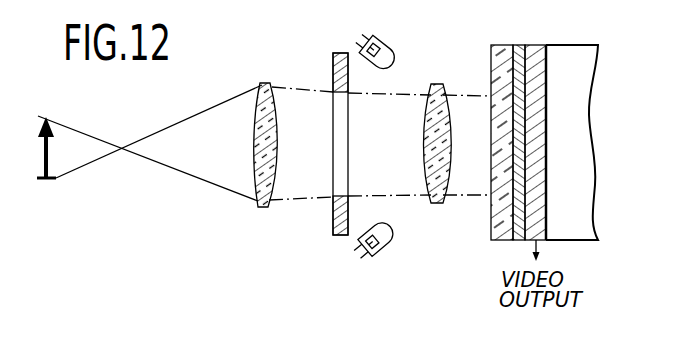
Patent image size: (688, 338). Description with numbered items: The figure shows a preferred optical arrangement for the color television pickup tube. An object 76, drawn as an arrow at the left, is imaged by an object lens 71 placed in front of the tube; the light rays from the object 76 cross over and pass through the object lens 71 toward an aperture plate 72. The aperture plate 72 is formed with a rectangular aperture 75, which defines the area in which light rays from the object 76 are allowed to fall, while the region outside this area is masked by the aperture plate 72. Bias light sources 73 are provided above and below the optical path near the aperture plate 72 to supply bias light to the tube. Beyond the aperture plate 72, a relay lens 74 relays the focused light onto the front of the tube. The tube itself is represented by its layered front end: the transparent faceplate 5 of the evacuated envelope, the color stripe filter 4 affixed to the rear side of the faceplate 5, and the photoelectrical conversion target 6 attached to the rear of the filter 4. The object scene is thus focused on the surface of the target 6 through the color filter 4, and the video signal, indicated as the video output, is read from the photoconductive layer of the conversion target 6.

The object 76 is at (35, 173).
The object lens 71 is at (262, 208).
The aperture plate 72 is at (334, 237).
The rectangular aperture 75 is at (338, 94).
The bias light sources 73 is at (390, 47).
The relay lens 74 is at (437, 205).
The transparent faceplate 5 is at (501, 44).
The color stripe filter 4 is at (517, 44).
The photoelectrical conversion target 6 is at (539, 44).